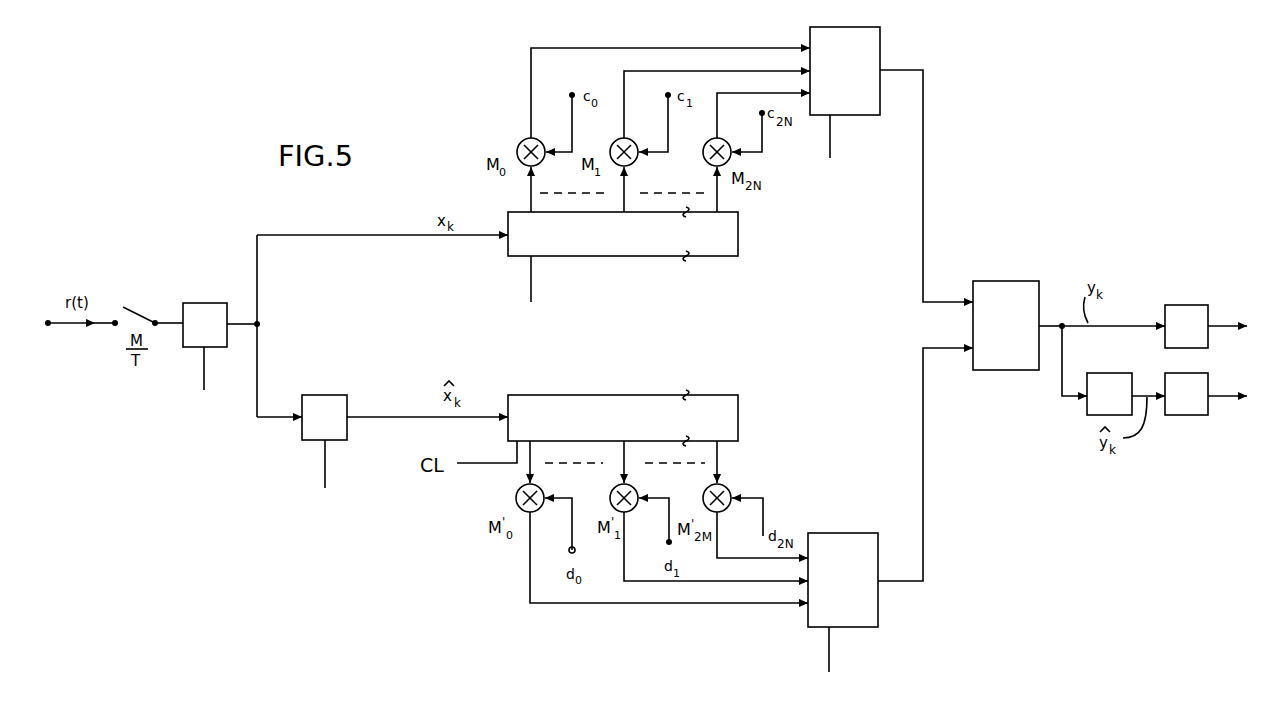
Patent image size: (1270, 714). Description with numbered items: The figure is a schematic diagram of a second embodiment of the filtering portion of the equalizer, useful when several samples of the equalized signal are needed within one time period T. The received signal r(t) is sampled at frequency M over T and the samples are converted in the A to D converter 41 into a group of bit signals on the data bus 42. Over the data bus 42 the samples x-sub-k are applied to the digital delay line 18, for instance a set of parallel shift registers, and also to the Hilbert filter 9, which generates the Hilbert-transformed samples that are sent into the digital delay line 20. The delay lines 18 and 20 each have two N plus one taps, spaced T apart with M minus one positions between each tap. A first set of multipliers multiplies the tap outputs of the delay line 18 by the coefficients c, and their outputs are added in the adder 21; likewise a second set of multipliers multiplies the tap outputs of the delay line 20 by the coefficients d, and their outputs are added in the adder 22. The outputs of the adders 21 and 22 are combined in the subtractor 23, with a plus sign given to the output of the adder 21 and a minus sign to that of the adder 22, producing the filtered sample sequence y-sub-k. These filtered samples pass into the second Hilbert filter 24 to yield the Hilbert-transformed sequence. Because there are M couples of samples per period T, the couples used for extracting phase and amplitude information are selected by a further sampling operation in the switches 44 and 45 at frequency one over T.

The A to D converter 41 is at (200, 302).
The data bus 42 is at (258, 298).
The Hilbert filter 9 is at (323, 403).
The digital delay line 18 is at (742, 232).
The digital delay line 20 is at (740, 411).
The adder 21 is at (848, 30).
The adder 22 is at (845, 538).
The subtractor 23 is at (1013, 280).
The second Hilbert filter 24 is at (1112, 378).
The switch 44 is at (1193, 305).
The switch 45 is at (1202, 373).